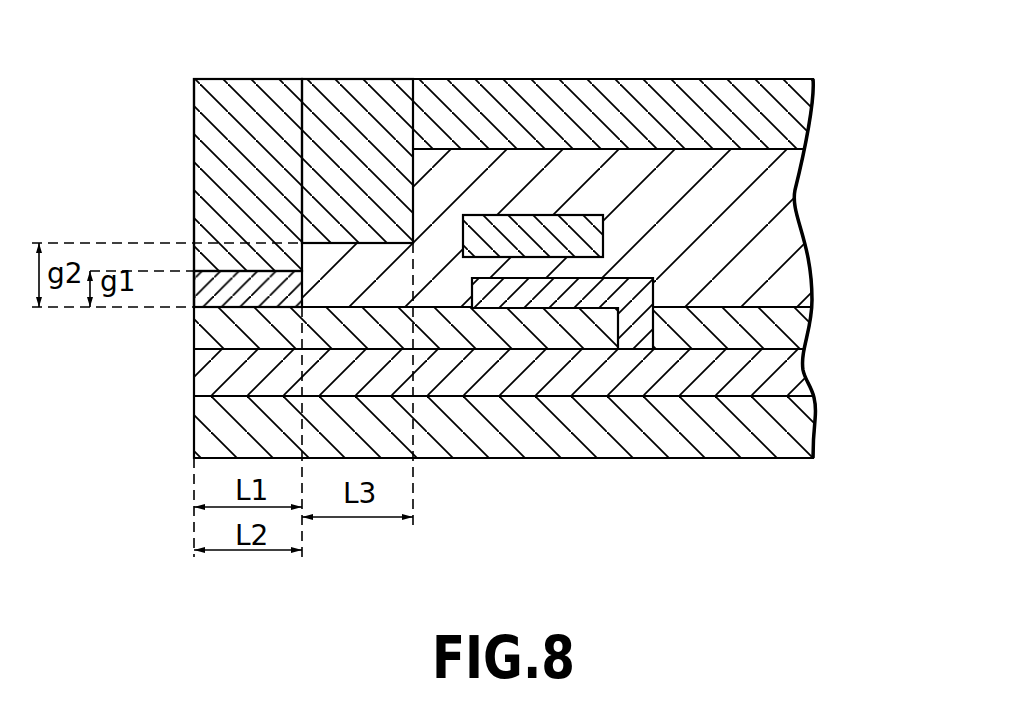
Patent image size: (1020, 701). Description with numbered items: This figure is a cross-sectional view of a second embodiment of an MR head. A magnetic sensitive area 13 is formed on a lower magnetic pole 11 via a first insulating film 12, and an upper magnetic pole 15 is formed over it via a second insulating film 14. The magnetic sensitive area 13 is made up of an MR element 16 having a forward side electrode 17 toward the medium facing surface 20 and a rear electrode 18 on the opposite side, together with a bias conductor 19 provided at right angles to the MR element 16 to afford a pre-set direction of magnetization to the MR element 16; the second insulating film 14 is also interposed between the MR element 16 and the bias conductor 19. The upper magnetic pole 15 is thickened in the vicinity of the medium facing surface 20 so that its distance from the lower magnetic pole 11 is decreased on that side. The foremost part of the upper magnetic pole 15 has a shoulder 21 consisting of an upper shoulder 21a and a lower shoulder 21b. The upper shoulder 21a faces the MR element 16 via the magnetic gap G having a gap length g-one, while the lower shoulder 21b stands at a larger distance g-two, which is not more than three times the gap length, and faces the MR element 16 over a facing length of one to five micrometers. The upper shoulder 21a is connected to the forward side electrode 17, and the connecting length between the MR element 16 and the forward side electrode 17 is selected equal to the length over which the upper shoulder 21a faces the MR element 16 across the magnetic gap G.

The lower magnetic pole 11 is at (790, 437).
The first insulating film 12 is at (780, 375).
The magnetic sensitive area 13 is at (648, 260).
The second insulating film 14 is at (773, 190).
The upper magnetic pole 15 is at (793, 118).
The MR element 16 is at (453, 328).
The forward side electrode 17 is at (194, 308).
The rear electrode 18 is at (645, 314).
The bias conductor 19 is at (609, 215).
The medium facing surface 20 is at (194, 130).
The shoulder 21 is at (357, 278).
The upper shoulder 21a is at (246, 271).
The lower shoulder 21b is at (333, 243).
The magnetic gap G is at (194, 288).